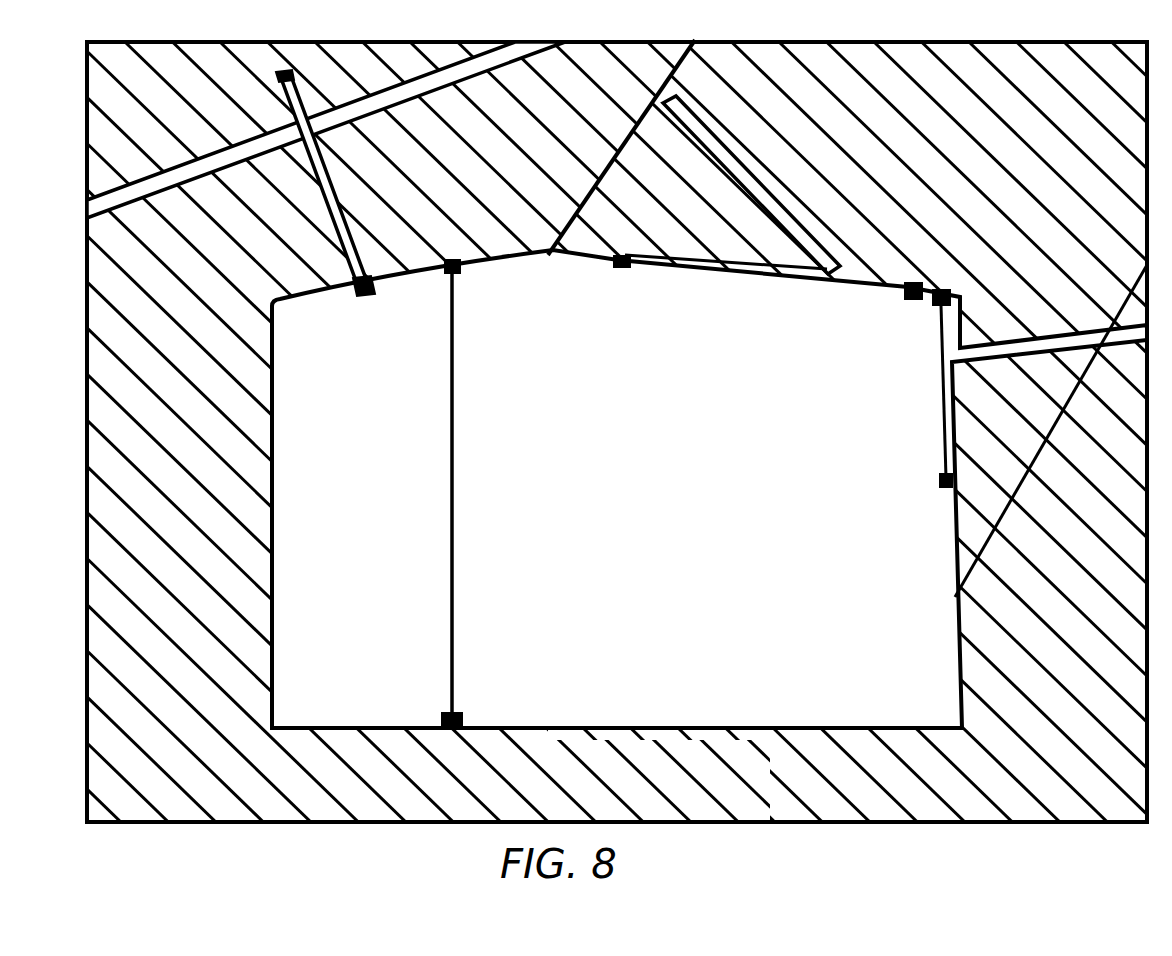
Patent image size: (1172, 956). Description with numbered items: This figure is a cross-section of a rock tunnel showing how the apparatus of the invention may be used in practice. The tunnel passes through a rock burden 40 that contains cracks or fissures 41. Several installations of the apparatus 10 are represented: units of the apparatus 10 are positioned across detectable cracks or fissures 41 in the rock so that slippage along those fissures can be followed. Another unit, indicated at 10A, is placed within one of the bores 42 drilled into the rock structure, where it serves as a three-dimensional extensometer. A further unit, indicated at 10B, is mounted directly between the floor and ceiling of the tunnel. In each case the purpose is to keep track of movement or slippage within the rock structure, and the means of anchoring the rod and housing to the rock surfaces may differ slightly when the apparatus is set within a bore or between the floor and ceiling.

The rock burden 40 is at (556, 168).
The cracks or fissures 41 is at (417, 88).
The bores 42 is at (338, 204).
The apparatus 10 is at (760, 272).
The apparatus within a bore 10A is at (293, 137).
The apparatus between floor and ceiling 10B is at (456, 389).